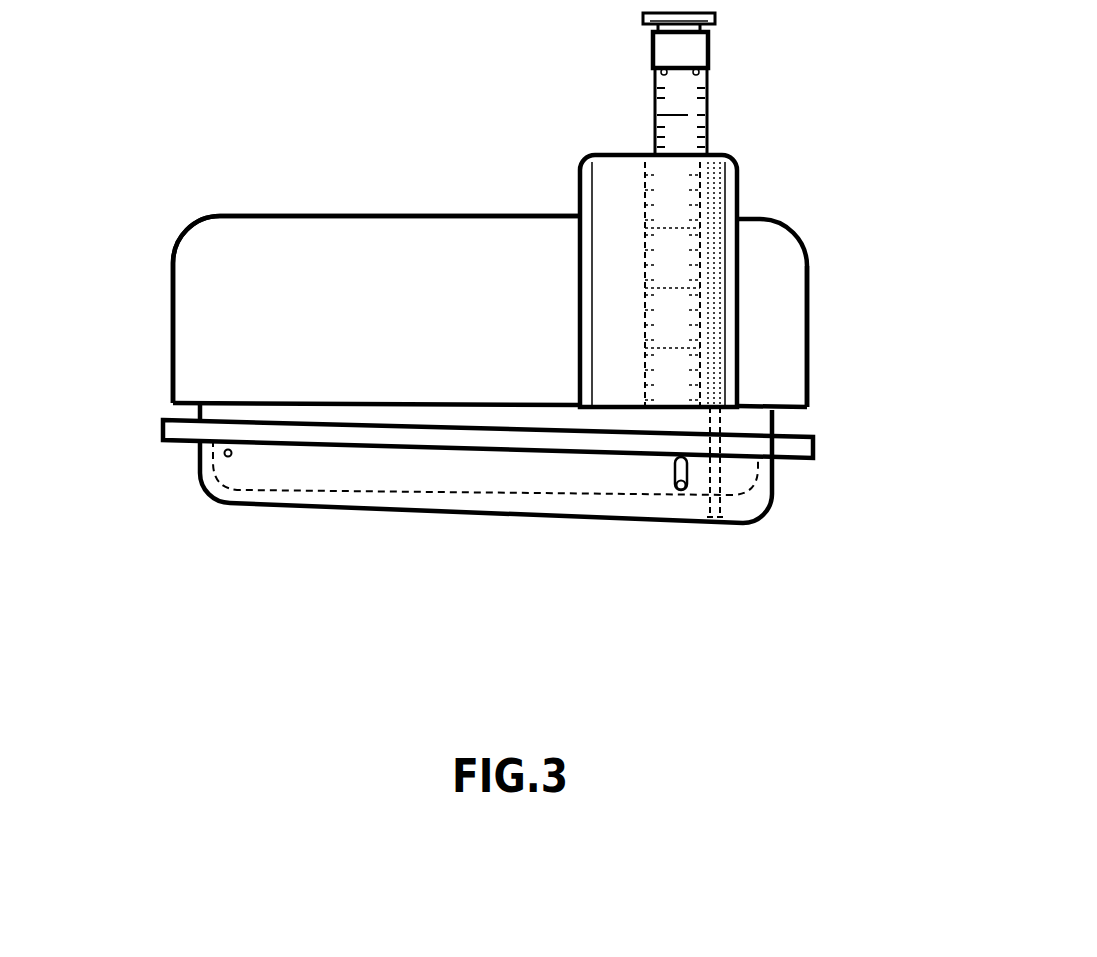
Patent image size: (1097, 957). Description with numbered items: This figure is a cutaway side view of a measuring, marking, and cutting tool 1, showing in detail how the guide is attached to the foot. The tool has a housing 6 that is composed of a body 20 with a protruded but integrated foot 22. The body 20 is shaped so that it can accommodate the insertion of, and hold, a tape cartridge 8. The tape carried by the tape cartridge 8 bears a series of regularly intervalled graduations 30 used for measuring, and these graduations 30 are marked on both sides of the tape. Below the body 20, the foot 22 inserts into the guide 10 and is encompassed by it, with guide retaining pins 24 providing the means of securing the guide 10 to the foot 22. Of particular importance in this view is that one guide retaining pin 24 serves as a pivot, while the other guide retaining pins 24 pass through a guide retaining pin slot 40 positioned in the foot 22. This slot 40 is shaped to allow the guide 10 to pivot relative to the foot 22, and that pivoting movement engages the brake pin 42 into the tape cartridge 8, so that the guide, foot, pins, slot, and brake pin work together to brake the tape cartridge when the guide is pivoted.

The measuring, marking, and cutting tool 1 is at (360, 153).
The housing 6 is at (220, 215).
The body 20 is at (260, 293).
The tape cartridge 8 is at (737, 187).
The graduations 30 is at (707, 82).
The brake pin 42 is at (720, 423).
The guide 10 is at (747, 525).
The foot 22 is at (297, 490).
The guide retaining pins 24 is at (225, 455).
The guide retaining pin slot 40 is at (673, 470).